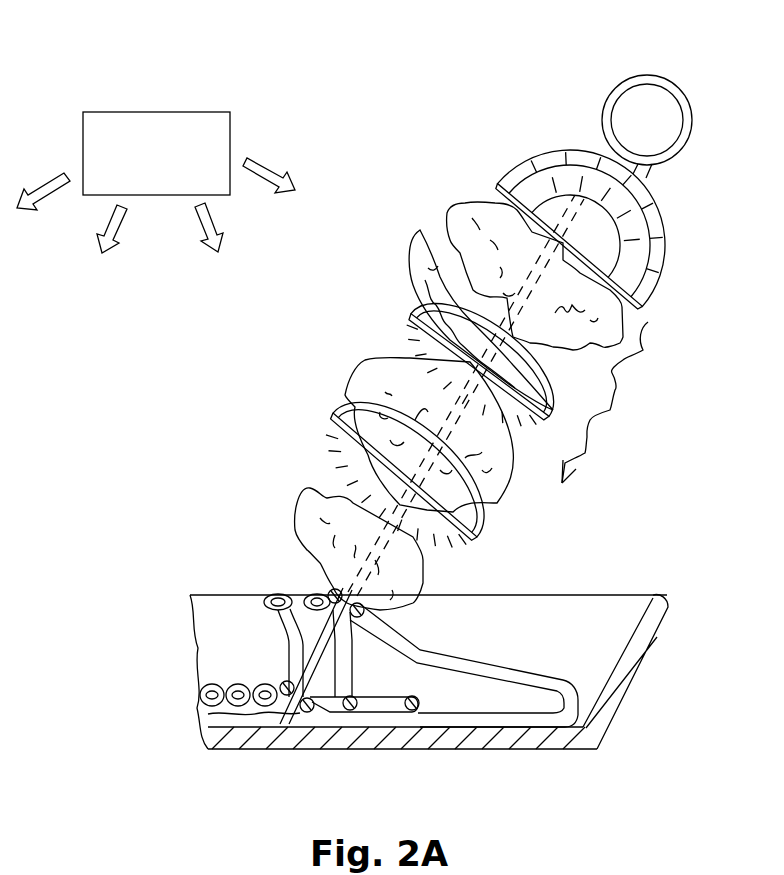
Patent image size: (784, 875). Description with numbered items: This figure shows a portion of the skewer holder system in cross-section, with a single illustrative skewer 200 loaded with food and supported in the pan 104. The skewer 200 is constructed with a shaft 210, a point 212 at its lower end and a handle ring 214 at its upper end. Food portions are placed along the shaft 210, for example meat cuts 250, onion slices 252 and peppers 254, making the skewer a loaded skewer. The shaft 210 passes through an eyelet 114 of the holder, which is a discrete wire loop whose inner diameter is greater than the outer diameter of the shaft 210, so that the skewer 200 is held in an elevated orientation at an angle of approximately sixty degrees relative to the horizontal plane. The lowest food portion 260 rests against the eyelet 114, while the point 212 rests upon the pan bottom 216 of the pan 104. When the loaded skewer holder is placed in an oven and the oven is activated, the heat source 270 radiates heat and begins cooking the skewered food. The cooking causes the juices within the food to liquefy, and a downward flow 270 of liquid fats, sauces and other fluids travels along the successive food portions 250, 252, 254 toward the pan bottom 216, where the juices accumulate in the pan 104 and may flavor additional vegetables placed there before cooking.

The pan 104 is at (650, 594).
The eyelet 114 is at (330, 590).
The skewer 200 is at (476, 305).
The shaft 210 is at (330, 483).
The point 212 is at (290, 712).
The handle ring 214 is at (690, 118).
The pan bottom 216 is at (303, 712).
The meat cuts 250 is at (297, 497).
The onion slices 252 is at (333, 413).
The peppers 254 is at (420, 232).
The lowest food portion 260 is at (432, 627).
The heat source 270 is at (88, 162).